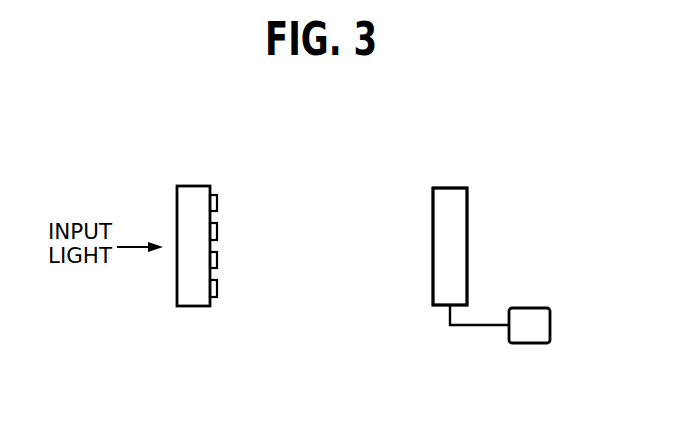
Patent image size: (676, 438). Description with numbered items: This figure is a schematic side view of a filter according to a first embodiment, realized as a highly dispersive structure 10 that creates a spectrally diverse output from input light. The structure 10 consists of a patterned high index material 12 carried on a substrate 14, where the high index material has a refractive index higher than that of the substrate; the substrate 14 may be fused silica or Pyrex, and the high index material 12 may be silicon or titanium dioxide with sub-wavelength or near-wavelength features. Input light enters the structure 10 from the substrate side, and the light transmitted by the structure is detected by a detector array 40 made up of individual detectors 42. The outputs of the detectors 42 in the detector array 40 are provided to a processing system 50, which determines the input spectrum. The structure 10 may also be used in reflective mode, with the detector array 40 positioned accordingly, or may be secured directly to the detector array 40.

The highly dispersive structure 10 is at (267, 152).
The patterned high index material 12 is at (216, 205).
The substrate 14 is at (177, 297).
The detector array 40 is at (452, 188).
The detectors 42 is at (450, 246).
The processing system 50 is at (528, 308).